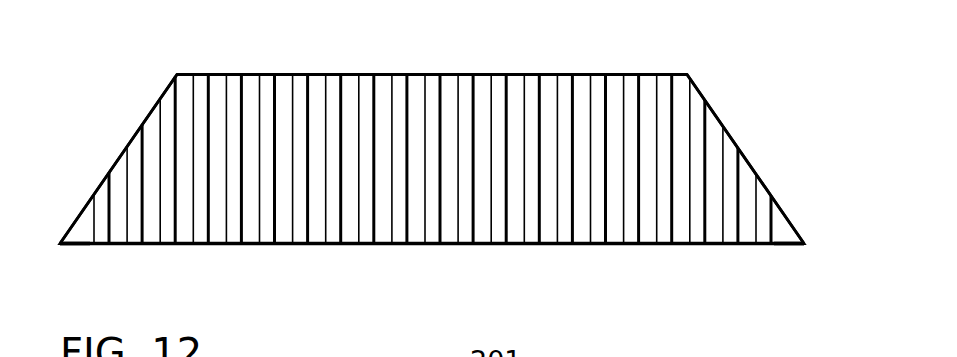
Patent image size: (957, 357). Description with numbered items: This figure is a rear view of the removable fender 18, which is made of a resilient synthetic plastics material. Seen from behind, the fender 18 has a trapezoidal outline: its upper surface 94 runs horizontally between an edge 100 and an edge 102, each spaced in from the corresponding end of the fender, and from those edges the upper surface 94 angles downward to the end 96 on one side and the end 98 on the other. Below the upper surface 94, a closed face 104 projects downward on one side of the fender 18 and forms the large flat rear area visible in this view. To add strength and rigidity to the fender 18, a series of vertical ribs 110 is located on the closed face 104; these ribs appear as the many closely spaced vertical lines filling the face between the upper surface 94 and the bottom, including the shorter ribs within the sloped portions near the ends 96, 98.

The fender 18 is at (762, 74).
The upper surface 94 is at (391, 72).
The end 96 is at (806, 242).
The end 98 is at (61, 243).
The edge 100 is at (689, 73).
The edge 102 is at (176, 73).
The closed face 104 is at (318, 227).
The vertical ribs 110 is at (128, 174).